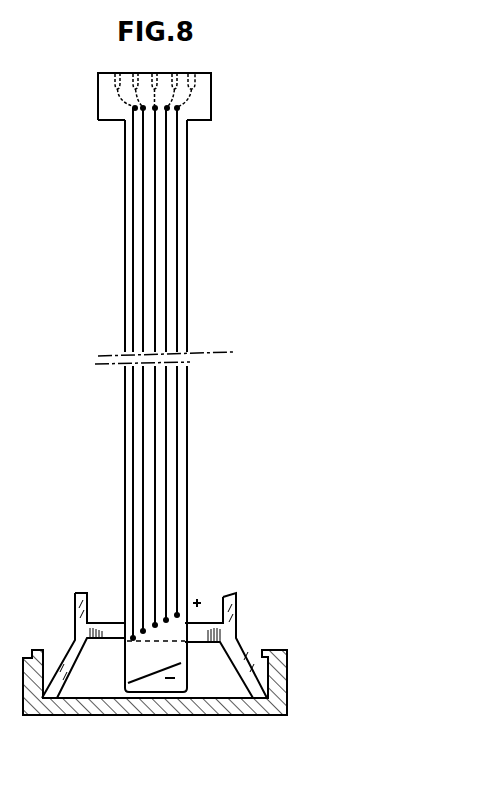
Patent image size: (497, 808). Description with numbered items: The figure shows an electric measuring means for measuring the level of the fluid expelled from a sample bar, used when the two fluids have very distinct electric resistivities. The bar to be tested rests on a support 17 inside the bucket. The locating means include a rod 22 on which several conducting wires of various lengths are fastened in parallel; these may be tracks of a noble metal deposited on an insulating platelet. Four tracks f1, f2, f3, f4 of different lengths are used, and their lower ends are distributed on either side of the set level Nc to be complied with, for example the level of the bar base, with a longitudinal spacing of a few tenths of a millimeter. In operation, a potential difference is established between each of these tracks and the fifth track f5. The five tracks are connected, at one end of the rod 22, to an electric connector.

The rod 22 is at (200, 184).
The support 17 is at (230, 604).
The set level Nc is at (106, 618).
The track f1 is at (133, 282).
The track f2 is at (143, 235).
The track f3 is at (155, 324).
The track f4 is at (166, 280).
The fifth track f5 is at (178, 236).